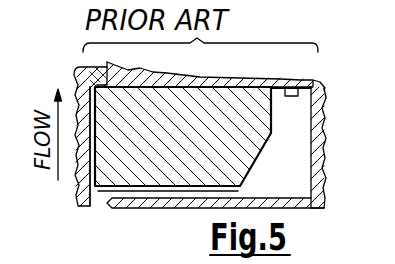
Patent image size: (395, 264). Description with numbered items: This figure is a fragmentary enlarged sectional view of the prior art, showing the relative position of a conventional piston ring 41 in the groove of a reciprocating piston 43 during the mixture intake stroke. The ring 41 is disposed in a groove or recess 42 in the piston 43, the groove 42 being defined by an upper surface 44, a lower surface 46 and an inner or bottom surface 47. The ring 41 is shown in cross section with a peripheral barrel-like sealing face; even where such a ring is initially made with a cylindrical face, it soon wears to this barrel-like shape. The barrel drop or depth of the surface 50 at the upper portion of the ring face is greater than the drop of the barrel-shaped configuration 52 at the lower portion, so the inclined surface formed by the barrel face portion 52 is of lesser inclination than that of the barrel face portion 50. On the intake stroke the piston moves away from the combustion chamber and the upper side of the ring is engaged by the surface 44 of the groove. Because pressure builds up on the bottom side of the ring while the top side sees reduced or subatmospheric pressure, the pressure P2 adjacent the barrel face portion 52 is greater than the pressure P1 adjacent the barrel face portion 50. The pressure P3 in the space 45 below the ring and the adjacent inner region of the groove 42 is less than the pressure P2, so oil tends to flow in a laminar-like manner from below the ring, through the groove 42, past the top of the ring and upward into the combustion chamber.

The conventional piston ring 41 is at (217, 105).
The groove 42 is at (292, 142).
The piston 43 is at (318, 157).
The upper surface 44 is at (310, 82).
The space 45 is at (163, 190).
The lower surface 46 is at (293, 198).
The inner surface 47 is at (306, 161).
The barrel face portion 50 is at (99, 96).
The barrel face portion 52 is at (90, 172).
The pressure P1 is at (98, 74).
The pressure P2 is at (95, 185).
The pressure P3 is at (240, 189).